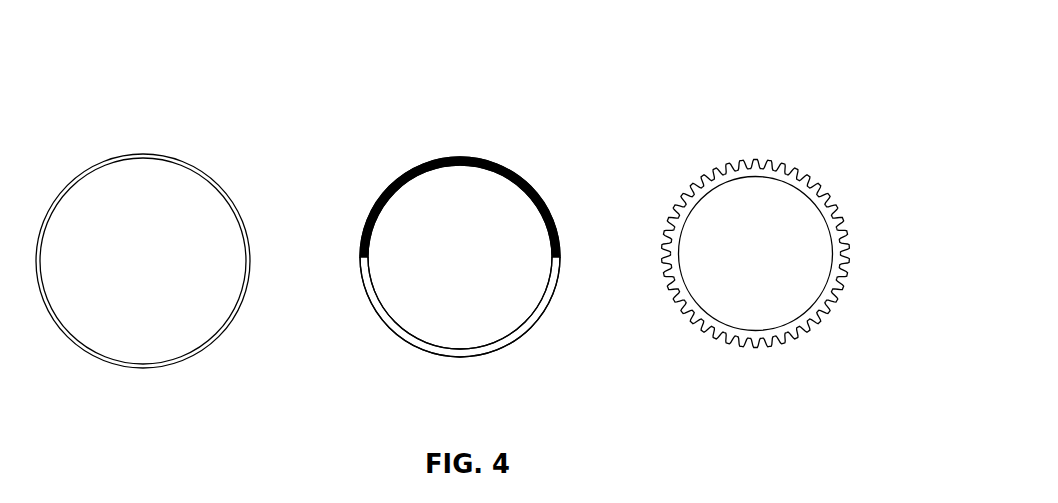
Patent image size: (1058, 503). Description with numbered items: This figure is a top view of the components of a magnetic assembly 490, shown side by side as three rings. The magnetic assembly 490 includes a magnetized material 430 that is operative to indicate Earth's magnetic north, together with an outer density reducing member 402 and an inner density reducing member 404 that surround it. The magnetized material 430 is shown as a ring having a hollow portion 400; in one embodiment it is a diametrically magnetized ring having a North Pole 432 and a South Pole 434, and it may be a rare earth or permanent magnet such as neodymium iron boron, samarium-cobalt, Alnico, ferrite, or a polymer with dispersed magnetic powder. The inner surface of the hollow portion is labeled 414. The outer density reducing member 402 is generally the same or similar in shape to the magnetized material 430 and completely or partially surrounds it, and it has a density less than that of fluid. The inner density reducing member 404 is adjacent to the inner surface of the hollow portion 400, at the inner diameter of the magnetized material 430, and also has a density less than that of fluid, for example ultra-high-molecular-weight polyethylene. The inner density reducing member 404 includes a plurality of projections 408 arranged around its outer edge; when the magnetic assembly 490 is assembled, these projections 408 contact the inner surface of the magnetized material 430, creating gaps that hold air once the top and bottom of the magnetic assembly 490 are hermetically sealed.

The hollow portion 400 is at (443, 198).
The outer density reducing member 402 is at (171, 372).
The inner density reducing member 404 is at (787, 253).
The plurality of projections 408 is at (742, 162).
The inner surface 414 is at (377, 218).
The magnetized material 430 is at (515, 347).
The North Pole 432 is at (512, 170).
The South Pole 434 is at (417, 347).
The magnetic assembly 490 is at (629, 74).